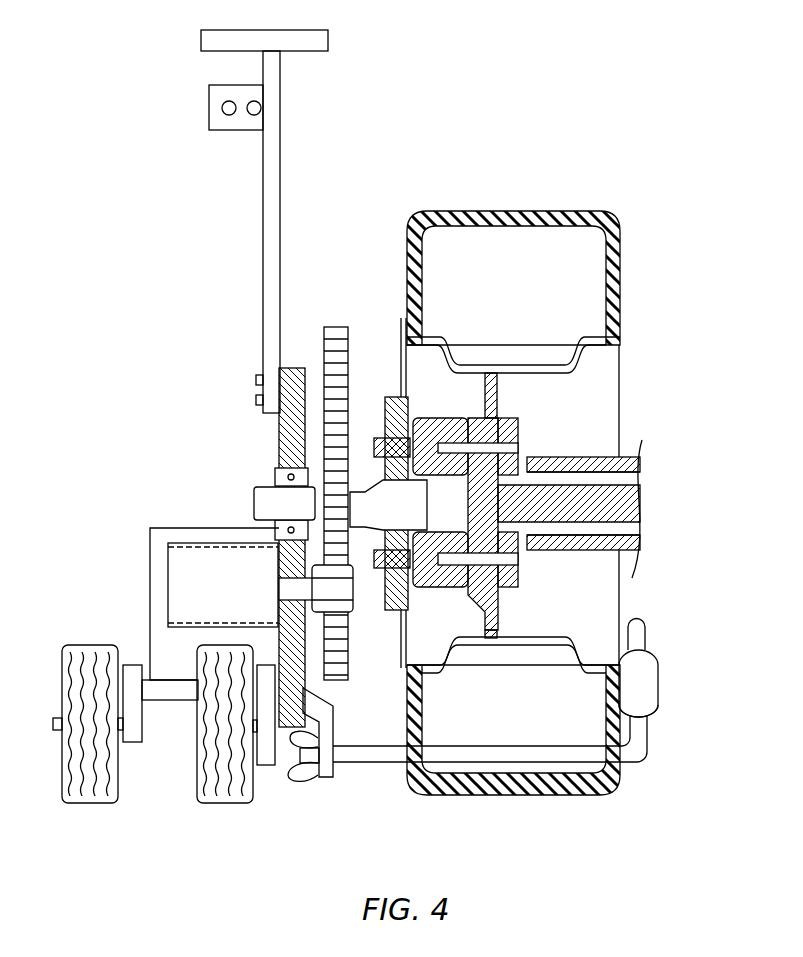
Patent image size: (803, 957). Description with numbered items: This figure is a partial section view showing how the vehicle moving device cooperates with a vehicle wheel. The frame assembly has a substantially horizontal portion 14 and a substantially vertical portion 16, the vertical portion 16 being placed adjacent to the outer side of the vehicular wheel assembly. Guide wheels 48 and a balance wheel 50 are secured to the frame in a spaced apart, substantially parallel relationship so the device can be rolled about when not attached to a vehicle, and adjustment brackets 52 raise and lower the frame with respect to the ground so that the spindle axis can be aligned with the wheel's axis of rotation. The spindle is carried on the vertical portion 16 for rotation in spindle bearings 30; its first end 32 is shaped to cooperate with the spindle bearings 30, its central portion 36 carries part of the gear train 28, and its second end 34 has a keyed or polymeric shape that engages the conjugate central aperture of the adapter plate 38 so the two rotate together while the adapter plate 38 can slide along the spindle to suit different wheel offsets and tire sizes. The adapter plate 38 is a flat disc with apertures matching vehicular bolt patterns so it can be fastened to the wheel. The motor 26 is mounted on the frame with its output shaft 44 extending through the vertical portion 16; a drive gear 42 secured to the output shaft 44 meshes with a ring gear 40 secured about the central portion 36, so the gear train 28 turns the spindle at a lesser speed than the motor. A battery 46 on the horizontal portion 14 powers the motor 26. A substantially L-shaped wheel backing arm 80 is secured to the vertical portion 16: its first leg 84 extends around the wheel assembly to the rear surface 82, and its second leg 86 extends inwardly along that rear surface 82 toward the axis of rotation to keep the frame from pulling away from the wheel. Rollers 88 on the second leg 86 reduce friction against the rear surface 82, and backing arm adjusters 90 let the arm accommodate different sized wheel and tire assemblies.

The horizontal portion 14 is at (172, 693).
The vertical portion 16 is at (278, 432).
The motor 26 is at (185, 588).
The gear train 28 is at (333, 327).
The spindle bearings 30 is at (275, 478).
The first end 32 is at (254, 508).
The second end 34 is at (362, 487).
The central portion 36 is at (289, 447).
The adapter plate 38 is at (393, 397).
The ring gear 40 is at (337, 372).
The drive gear 42 is at (340, 590).
The output shaft 44 is at (305, 589).
The battery 46 is at (160, 648).
The guide wheels 48 is at (215, 803).
The balance wheel 50 is at (80, 803).
The adjustment brackets 52 is at (130, 742).
The wheel backing arm 80 is at (353, 757).
The rear surface 82 is at (618, 242).
The first leg 84 is at (507, 752).
The second leg 86 is at (640, 636).
The rollers 88 is at (650, 680).
The backing arm adjusters 90 is at (325, 770).